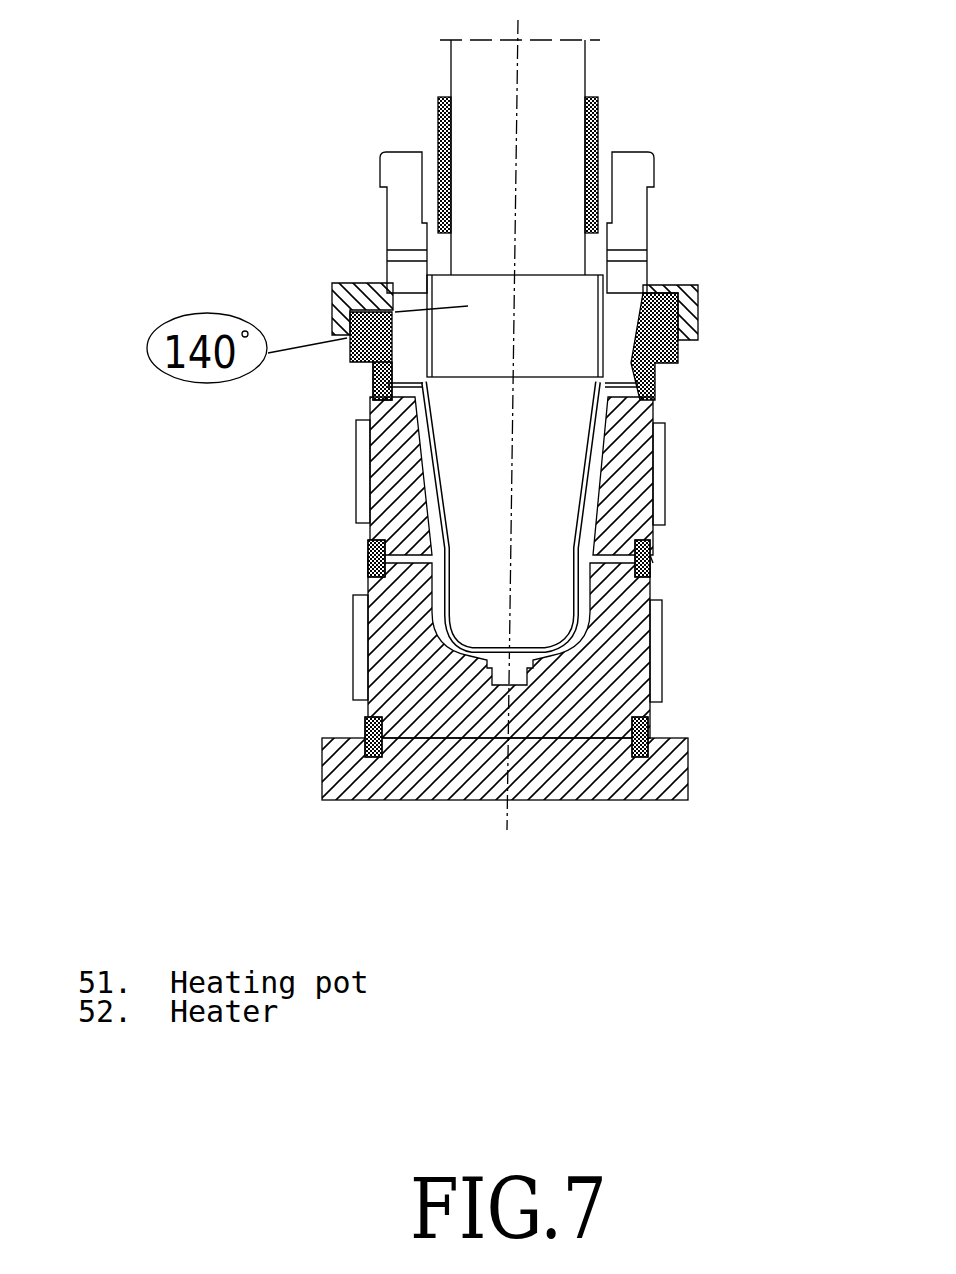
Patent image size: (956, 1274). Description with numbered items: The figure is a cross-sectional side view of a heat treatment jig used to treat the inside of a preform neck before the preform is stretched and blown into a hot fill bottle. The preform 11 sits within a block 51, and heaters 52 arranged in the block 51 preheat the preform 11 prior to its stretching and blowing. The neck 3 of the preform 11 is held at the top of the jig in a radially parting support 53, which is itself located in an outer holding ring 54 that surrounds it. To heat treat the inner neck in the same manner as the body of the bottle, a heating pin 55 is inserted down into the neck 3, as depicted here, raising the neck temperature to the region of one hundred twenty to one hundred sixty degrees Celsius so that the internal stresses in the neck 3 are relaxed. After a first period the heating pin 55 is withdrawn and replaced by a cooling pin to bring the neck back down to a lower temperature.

The neck 3 is at (353, 368).
The preform 11 is at (587, 527).
The block 51 is at (623, 690).
The heaters 52 is at (598, 110).
The radially parting support 53 is at (633, 235).
The outer holding ring 54 is at (680, 363).
The heating pin 55 is at (477, 77).